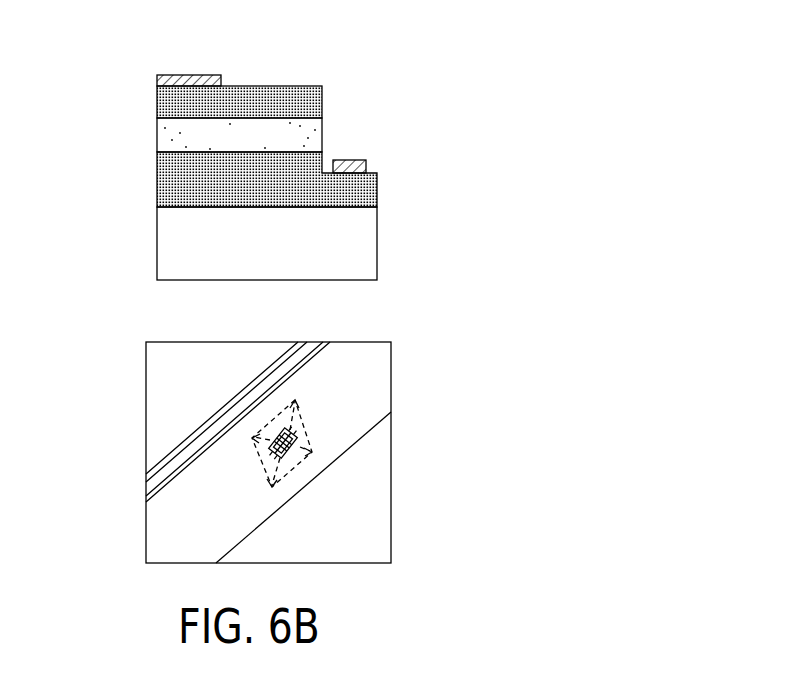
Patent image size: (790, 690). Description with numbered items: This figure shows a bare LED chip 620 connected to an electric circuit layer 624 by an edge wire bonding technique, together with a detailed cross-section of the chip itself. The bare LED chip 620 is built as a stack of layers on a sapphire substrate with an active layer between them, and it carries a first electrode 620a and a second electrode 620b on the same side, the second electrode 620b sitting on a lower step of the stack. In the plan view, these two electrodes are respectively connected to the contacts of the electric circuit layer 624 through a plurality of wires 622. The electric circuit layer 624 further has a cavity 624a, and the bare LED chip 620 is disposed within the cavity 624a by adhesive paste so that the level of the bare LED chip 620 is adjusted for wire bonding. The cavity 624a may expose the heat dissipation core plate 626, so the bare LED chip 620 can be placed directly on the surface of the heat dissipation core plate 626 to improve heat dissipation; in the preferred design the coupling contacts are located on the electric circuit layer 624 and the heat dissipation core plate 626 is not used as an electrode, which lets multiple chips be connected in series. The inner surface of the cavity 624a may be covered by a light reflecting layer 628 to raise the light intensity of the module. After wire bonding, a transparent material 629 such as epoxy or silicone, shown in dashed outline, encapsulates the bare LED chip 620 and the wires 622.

The bare LED chip 620 is at (340, 80).
The first electrode 620a is at (195, 75).
The second electrode 620b is at (352, 160).
The wires 622 is at (287, 455).
The electric circuit layer 624 is at (365, 366).
The cavity 624a is at (310, 437).
The heat dissipation core plate 626 is at (338, 527).
The light reflecting layer 628 is at (308, 425).
The transparent material 629 is at (287, 473).